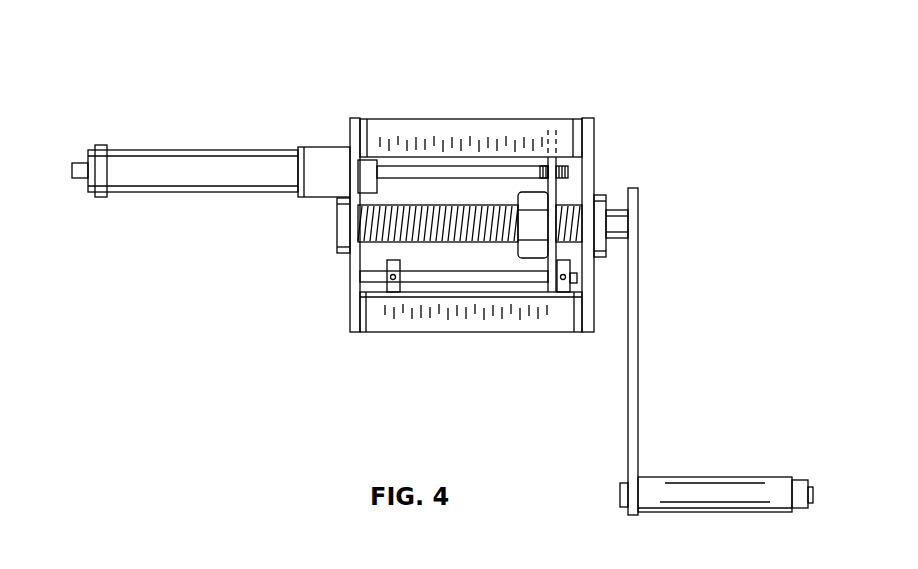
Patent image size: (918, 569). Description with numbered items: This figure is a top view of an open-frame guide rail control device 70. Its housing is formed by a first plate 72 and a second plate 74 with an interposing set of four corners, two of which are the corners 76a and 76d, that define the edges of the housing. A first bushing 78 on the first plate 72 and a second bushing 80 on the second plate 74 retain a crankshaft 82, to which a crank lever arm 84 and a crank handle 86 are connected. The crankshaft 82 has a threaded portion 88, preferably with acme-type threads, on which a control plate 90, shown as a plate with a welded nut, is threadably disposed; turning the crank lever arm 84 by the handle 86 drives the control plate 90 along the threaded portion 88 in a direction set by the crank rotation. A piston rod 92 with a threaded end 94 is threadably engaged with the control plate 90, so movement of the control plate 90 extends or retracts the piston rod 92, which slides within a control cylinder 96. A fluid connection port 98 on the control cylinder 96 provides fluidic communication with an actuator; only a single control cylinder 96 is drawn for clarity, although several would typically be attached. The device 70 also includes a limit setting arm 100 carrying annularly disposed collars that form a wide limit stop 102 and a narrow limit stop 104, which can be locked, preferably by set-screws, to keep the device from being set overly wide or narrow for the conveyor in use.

The guide rail control device 70 is at (683, 90).
The first plate 72 is at (352, 140).
The second plate 74 is at (595, 130).
The corner 76a is at (418, 135).
The corner 76d is at (522, 318).
The first bushing 78 is at (338, 246).
The second bushing 80 is at (600, 260).
The crankshaft 82 is at (618, 205).
The crank lever arm 84 is at (640, 400).
The crank handle 86 is at (688, 477).
The threaded portion 88 is at (380, 230).
The control plate 90 is at (555, 130).
The piston rod 92 is at (440, 166).
The threaded end 94 is at (568, 172).
The control cylinder 96 is at (142, 148).
The fluid connection port 98 is at (96, 195).
The limit setting arm 100 is at (432, 282).
The wide limit stop 102 is at (563, 292).
The narrow limit stop 104 is at (393, 292).